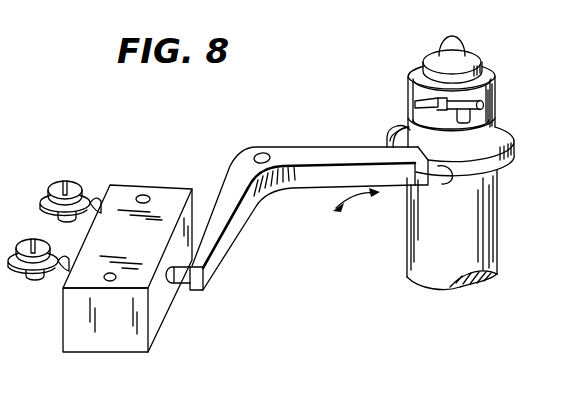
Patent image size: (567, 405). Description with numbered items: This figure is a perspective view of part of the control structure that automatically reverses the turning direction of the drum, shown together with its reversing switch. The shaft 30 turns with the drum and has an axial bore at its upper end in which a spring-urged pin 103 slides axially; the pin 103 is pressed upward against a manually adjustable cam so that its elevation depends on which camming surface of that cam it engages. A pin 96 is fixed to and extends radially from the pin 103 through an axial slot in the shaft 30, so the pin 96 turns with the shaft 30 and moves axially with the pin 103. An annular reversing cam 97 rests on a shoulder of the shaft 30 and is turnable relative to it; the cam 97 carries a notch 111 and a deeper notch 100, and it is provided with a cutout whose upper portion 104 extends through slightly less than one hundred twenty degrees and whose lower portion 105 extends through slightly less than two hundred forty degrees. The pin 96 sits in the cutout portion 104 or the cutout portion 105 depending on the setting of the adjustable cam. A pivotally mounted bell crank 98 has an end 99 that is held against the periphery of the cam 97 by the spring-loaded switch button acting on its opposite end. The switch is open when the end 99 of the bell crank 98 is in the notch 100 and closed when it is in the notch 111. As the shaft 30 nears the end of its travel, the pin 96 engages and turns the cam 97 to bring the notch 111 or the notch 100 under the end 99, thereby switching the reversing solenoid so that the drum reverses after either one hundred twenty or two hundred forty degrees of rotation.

The shaft 30 is at (477, 63).
The pin 96 is at (484, 107).
The annular reversing cam 97 is at (503, 133).
The bell crank 98 is at (306, 158).
The end of bell crank 99 is at (423, 183).
The notch 100 is at (395, 132).
The pin 103 is at (455, 44).
The upper cutout portion 104 is at (412, 87).
The lower cutout portion 105 is at (432, 118).
The notch 111 is at (447, 178).